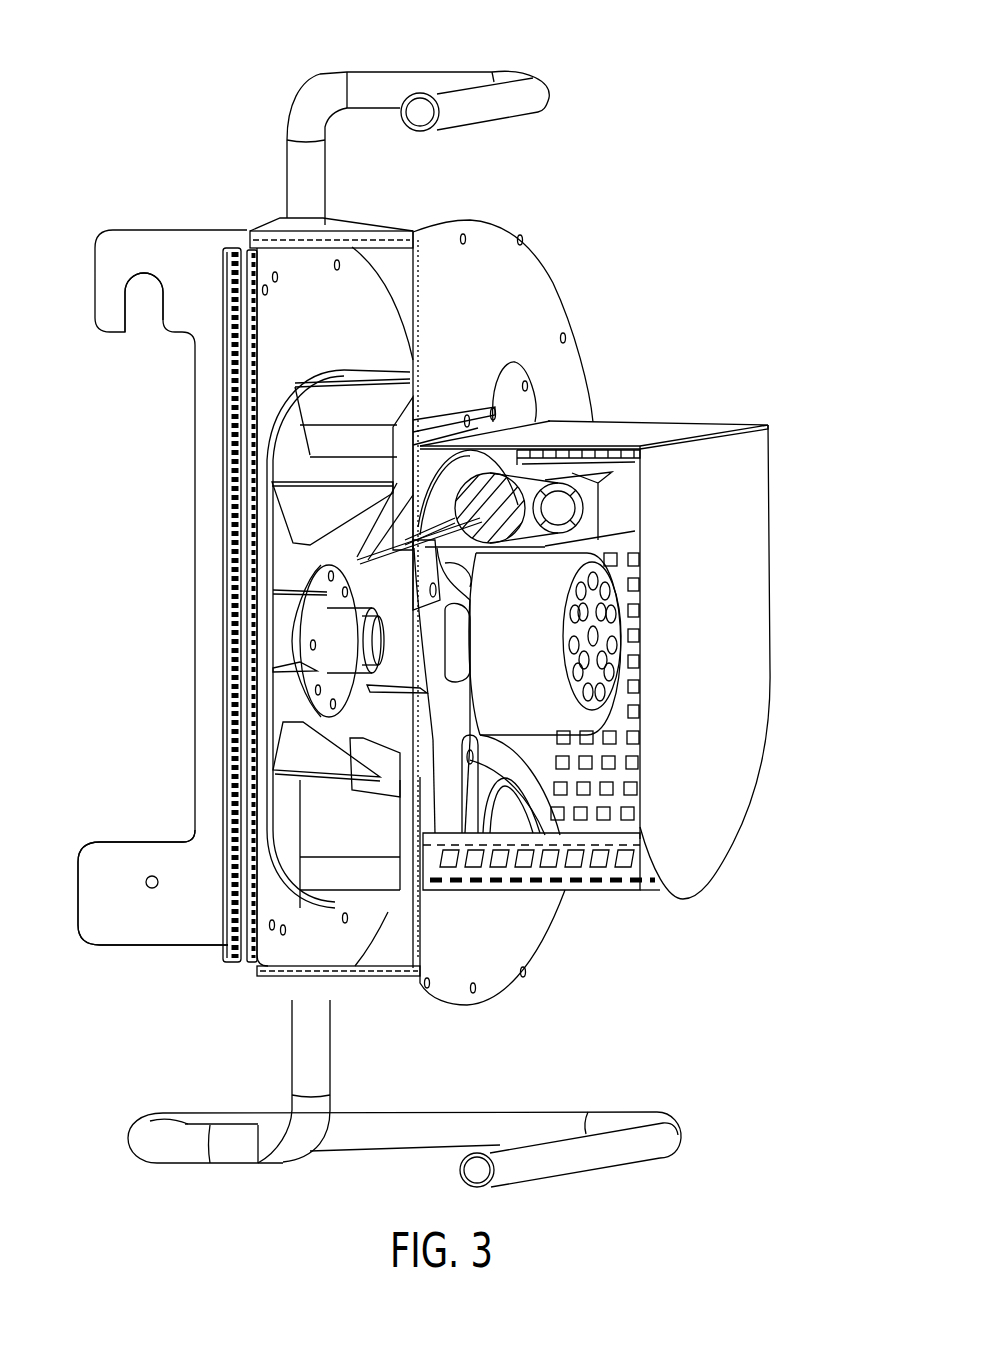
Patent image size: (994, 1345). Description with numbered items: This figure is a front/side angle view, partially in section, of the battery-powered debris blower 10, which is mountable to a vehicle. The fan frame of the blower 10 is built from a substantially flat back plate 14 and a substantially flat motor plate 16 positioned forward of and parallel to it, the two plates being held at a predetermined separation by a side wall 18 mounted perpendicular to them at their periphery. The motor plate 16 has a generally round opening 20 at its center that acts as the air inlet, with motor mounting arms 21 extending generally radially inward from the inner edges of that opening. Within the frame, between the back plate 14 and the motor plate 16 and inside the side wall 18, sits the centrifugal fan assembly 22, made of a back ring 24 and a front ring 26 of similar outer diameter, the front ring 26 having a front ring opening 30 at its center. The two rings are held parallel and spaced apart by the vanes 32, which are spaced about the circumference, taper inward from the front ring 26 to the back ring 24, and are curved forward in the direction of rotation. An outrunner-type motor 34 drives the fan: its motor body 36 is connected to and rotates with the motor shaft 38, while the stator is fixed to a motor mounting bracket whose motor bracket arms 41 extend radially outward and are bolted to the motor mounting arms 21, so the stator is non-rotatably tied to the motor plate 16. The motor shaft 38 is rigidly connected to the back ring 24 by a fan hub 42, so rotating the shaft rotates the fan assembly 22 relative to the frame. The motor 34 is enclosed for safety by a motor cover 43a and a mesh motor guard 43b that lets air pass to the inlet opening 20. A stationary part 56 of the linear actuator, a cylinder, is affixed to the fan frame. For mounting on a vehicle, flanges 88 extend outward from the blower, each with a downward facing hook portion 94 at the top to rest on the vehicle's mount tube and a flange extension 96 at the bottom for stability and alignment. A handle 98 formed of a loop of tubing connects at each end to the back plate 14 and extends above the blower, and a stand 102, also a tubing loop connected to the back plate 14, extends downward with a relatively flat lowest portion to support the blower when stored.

The battery-powered debris blower 10 is at (121, 686).
The back plate 14 is at (258, 963).
The motor plate 16 is at (537, 285).
The side wall 18 is at (377, 236).
The opening 20 is at (483, 790).
The motor mounting arms 21 is at (470, 745).
The centrifugal fan assembly 22 is at (323, 413).
The back ring 24 is at (277, 428).
The front ring 26 is at (400, 443).
The front ring opening 30 is at (503, 790).
The vanes 32 is at (293, 513).
The motor 34 is at (628, 585).
The motor body 36 is at (586, 514).
The motor shaft 38 is at (395, 638).
The motor bracket arms 41 is at (440, 717).
The fan hub 42 is at (333, 647).
The motor cover 43a is at (720, 630).
The motor guard 43b is at (630, 874).
The stationary part 56 is at (555, 562).
The flanges 88 is at (196, 250).
The hook portion 94 is at (108, 282).
The flange extension 96 is at (96, 893).
The handle 98 is at (422, 82).
The stand 102 is at (415, 1138).